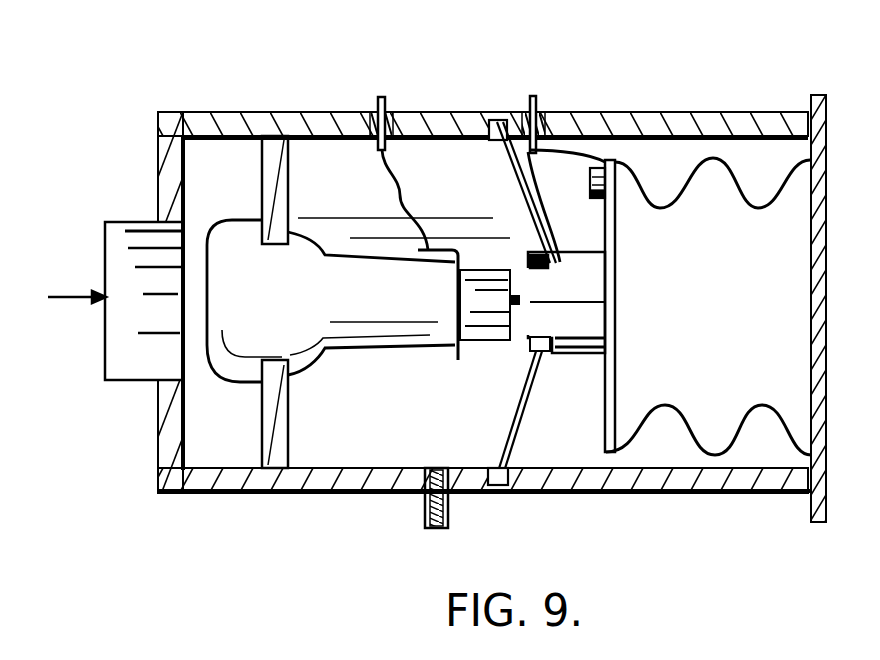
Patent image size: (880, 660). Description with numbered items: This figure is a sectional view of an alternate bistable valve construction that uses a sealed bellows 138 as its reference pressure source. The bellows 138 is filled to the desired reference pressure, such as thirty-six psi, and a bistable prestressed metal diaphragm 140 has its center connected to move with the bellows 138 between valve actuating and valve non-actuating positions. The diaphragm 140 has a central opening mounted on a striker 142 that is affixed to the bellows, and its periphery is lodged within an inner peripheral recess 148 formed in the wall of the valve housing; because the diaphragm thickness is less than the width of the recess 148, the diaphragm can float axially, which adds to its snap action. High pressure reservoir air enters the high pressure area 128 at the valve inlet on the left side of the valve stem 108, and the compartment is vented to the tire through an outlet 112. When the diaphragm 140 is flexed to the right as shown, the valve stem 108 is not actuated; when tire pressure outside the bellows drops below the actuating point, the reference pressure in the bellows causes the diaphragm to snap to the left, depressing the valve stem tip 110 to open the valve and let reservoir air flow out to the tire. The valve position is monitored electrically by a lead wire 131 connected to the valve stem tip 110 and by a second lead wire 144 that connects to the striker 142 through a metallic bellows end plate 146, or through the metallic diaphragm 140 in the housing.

The valve stem 108 is at (341, 243).
The valve stem tip 110 is at (511, 278).
The outlet 112 is at (425, 505).
The high pressure area 128 is at (105, 232).
The lead wire 131 is at (370, 96).
The sealed bellows 138 is at (703, 162).
The bistable metal diaphragm 140 is at (524, 420).
The striker 142 is at (517, 133).
The second lead wire 144 is at (540, 100).
The metallic bellows end plate 146 is at (615, 224).
The inner peripheral recess 148 is at (493, 468).